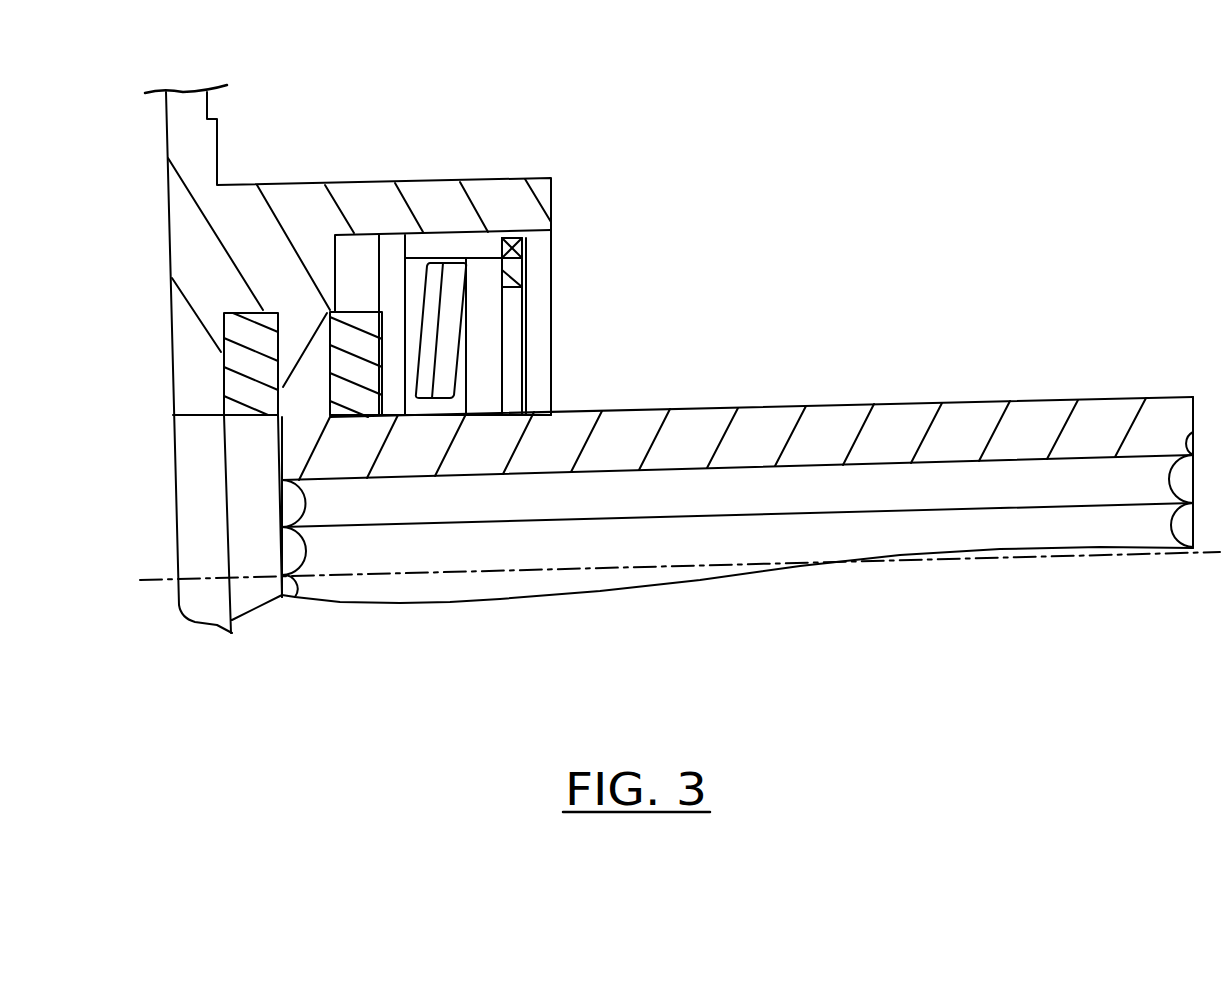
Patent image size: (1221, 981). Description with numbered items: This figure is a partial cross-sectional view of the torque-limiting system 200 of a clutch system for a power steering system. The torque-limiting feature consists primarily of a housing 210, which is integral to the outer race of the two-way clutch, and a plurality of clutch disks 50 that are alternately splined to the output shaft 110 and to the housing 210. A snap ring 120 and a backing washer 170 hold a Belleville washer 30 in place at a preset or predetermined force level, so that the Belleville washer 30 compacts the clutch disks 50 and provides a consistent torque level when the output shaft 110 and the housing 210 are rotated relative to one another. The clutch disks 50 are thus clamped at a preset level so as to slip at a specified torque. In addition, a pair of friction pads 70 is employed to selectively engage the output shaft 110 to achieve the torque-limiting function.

The torque-limiting system 200 is at (724, 187).
The housing 210 is at (193, 268).
The friction pad 70 is at (364, 398).
The clutch disk 50 is at (393, 257).
The Belleville washer 30 is at (451, 262).
The backing washer 170 is at (483, 272).
The snap ring 120 is at (524, 252).
The output shaft 110 is at (1030, 407).